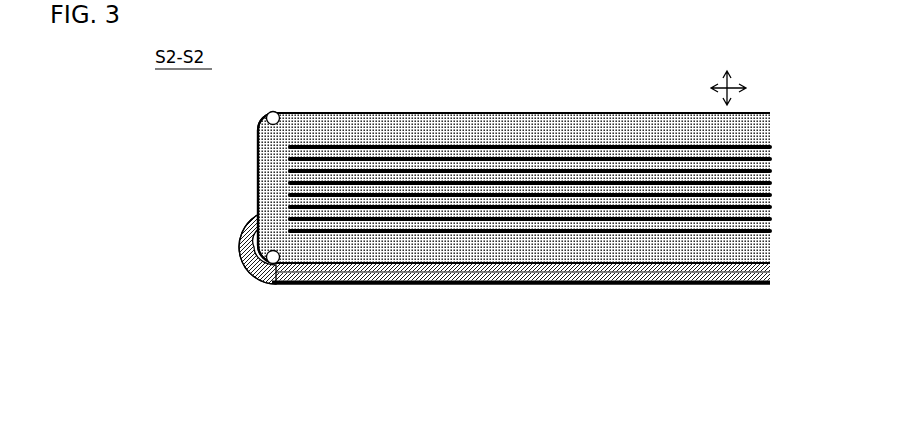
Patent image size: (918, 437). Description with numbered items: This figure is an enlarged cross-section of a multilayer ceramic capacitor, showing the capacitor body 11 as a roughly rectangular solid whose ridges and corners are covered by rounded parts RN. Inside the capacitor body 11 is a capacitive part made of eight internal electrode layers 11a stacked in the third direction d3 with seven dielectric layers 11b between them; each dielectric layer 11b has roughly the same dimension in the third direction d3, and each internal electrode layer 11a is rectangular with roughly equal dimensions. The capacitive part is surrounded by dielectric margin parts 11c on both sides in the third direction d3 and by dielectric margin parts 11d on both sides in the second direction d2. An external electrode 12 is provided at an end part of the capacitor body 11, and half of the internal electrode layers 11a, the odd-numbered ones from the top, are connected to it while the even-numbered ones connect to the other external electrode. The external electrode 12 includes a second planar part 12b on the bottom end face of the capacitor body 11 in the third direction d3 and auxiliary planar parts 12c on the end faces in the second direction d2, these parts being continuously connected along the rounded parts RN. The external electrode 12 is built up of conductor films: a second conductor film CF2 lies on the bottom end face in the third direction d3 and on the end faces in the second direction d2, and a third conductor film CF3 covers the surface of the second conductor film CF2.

The capacitor body 11 is at (475, 113).
The internal electrode layers 11a is at (543, 146).
The dielectric layers 11b is at (592, 157).
The dielectric margin parts 11c is at (660, 128).
The dielectric margin parts 11d is at (268, 178).
The external electrode 12 is at (470, 279).
The second planar part 12b is at (490, 283).
The auxiliary planar parts 12c is at (240, 246).
The second conductor film CF2 is at (372, 268).
The third conductor film CF3 is at (428, 275).
The rounded parts RN is at (277, 112).
The second direction d2 is at (738, 87).
The third direction d3 is at (727, 77).